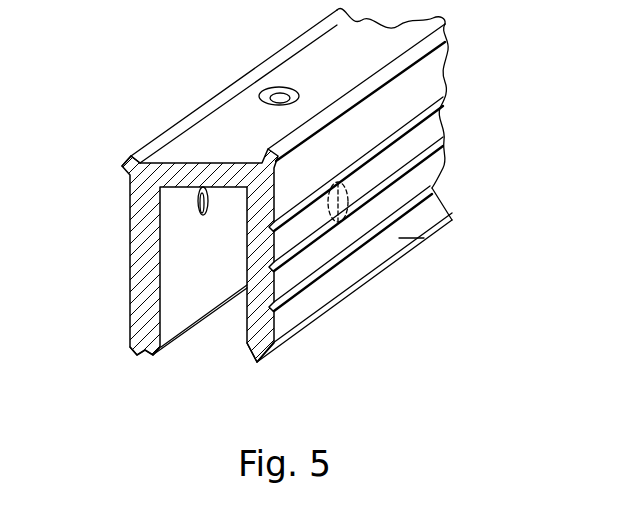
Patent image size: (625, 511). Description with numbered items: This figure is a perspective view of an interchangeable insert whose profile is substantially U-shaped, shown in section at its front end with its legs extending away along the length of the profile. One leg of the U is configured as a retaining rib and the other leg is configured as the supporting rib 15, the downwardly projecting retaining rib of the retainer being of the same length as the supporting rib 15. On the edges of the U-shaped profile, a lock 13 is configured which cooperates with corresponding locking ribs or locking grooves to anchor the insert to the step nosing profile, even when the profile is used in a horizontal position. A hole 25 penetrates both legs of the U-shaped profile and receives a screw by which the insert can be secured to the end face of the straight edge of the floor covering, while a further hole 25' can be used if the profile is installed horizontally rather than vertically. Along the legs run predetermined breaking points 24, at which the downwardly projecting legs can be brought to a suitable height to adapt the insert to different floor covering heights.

The lock 13 is at (126, 160).
The supporting rib 15 is at (142, 227).
The predetermined breaking points 24 is at (268, 268).
The hole 25 is at (321, 242).
The further hole 25' is at (315, 69).